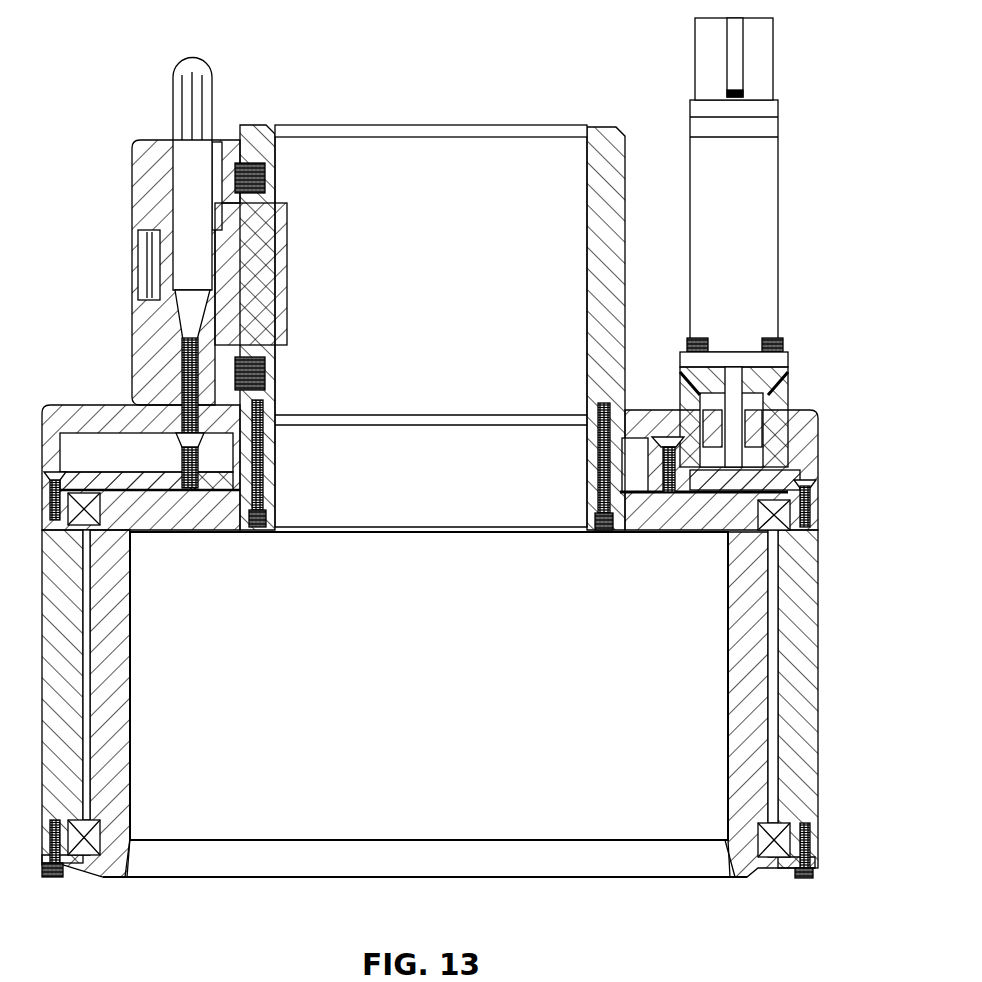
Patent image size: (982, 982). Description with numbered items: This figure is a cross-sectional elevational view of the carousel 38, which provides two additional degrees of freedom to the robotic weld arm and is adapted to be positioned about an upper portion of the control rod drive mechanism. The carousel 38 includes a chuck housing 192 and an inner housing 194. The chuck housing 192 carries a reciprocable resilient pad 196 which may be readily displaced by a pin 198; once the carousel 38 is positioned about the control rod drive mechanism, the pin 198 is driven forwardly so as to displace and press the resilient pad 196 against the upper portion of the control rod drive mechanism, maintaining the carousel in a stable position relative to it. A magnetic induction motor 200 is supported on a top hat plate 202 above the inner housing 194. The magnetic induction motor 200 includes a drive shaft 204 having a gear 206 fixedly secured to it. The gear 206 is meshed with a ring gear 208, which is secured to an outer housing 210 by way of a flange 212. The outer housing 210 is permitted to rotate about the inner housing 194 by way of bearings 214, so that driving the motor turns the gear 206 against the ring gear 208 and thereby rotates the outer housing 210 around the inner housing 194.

The carousel 38 is at (118, 274).
The chuck housing 192 is at (626, 240).
The inner housing 194 is at (727, 690).
The resilient pad 196 is at (288, 272).
The pin 198 is at (213, 93).
The magnetic induction motor 200 is at (770, 247).
The top hat plate 202 is at (815, 410).
The drive shaft 204 is at (733, 405).
The gear 206 is at (772, 465).
The ring gear 208 is at (662, 445).
The outer housing 210 is at (818, 690).
The flange 212 is at (812, 502).
The bearings 214 is at (103, 523).